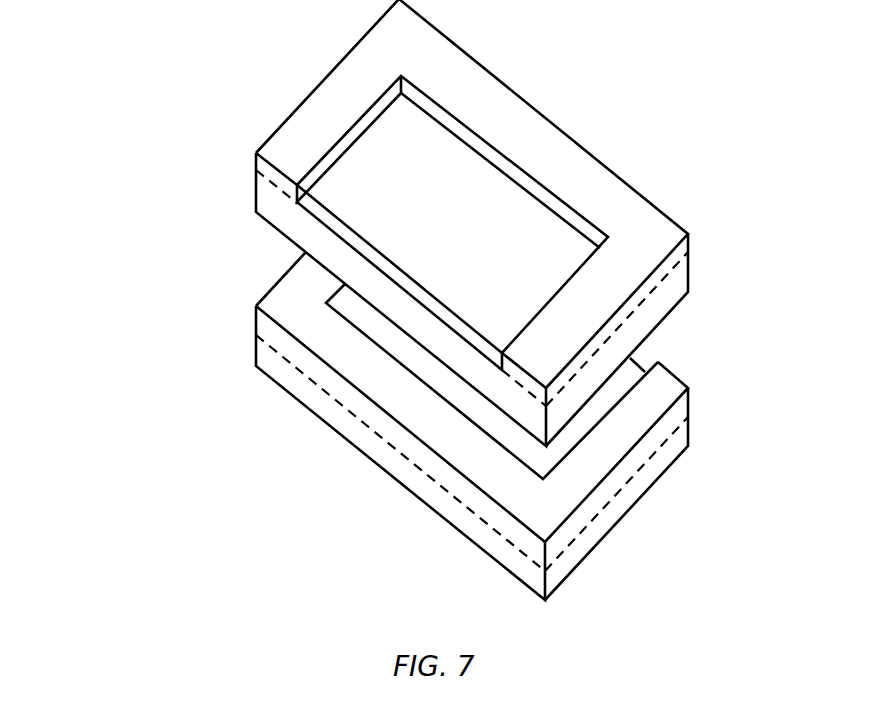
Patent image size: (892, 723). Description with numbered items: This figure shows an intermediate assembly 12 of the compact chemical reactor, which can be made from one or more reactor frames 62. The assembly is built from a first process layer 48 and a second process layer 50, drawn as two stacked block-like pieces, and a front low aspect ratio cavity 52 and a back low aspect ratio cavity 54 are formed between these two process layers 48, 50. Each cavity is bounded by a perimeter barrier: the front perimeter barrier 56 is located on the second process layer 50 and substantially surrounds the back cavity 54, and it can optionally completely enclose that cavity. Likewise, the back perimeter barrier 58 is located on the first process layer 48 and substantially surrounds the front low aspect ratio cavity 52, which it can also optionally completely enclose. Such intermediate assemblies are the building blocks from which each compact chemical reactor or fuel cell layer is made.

The assembly 12 is at (166, 113).
The reactor frame 62 is at (317, 83).
The back low aspect ratio cavity 54 is at (490, 143).
The first process layer 48 is at (300, 226).
The front perimeter barrier 56 is at (650, 240).
The second process layer 50 is at (510, 438).
The front low aspect ratio cavity 52 is at (590, 423).
The back perimeter barrier 58 is at (605, 450).